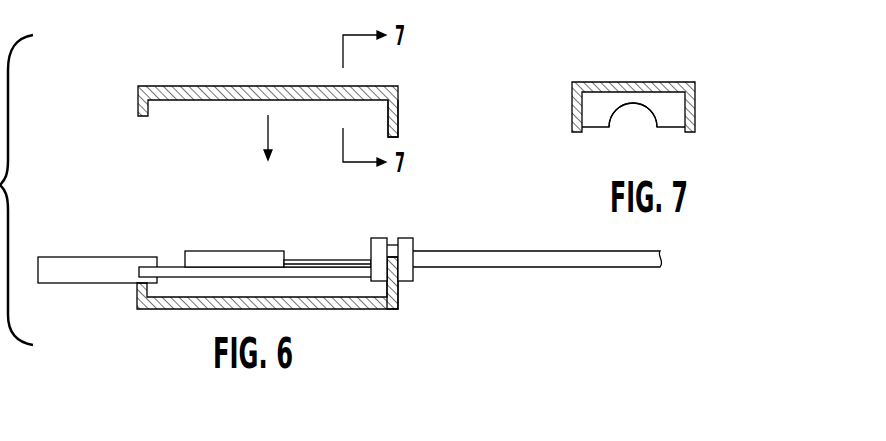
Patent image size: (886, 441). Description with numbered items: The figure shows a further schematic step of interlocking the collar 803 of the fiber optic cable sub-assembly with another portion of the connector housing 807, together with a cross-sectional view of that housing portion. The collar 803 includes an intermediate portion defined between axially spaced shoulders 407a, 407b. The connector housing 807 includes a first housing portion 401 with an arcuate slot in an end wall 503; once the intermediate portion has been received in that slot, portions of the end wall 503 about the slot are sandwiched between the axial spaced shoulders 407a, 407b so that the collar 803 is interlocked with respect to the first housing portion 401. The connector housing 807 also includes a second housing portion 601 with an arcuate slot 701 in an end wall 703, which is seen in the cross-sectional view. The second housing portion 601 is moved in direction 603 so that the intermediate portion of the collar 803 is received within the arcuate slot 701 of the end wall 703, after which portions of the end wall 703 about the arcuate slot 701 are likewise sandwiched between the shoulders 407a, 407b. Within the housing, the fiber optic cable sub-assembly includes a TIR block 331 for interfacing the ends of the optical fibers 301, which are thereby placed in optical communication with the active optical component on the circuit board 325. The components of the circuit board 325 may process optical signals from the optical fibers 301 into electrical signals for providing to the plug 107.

In FIG. 6, the plug 107 is at (53, 257).
In FIG. 6, the optical fiber 301 is at (315, 260).
In FIG. 6, the circuit board 325 is at (165, 267).
In FIG. 6, the total internal reflection block 331 is at (242, 251).
In FIG. 6, the first housing portion 401 is at (176, 310).
In FIG. 6, the axial spaced shoulder 407a is at (381, 238).
In FIG. 6, the axial spaced shoulder 407b is at (410, 238).
In FIG. 6, the end wall 503 is at (399, 292).
In FIG. 6, the second housing portion 601 is at (207, 86).
In FIG. 7, the second housing portion 601 is at (695, 100).
In FIG. 6, the direction 603 is at (268, 128).
In FIG. 7, the arcuate slot 701 is at (619, 108).
In FIG. 6, the end wall 703 is at (398, 113).
In FIG. 7, the end wall 703 is at (670, 129).
In FIG. 6, the collar 803 is at (445, 238).
In FIG. 6, the connector housing 807 is at (108, 335).